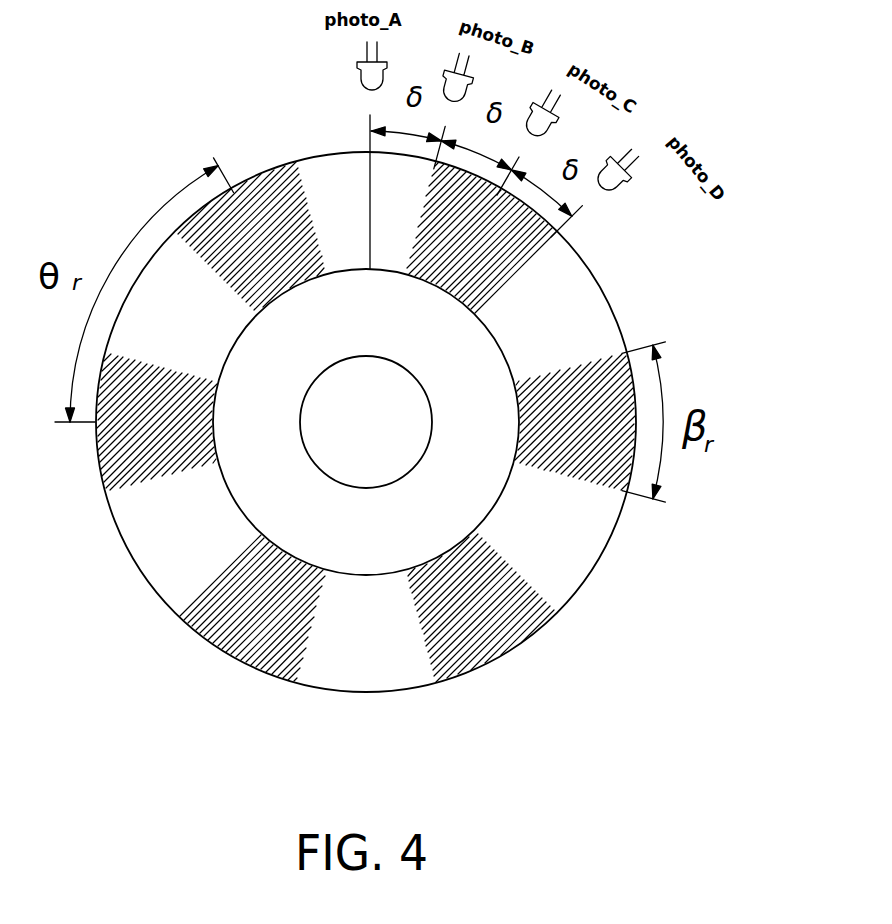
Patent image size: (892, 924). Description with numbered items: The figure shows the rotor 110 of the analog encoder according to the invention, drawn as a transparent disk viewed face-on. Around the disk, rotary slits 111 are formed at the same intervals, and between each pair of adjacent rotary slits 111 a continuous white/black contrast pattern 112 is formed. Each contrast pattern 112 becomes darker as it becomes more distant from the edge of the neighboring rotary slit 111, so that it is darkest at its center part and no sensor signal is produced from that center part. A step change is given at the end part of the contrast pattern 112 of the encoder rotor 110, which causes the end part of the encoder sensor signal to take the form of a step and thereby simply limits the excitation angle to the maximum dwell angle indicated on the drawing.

The rotor 110 is at (228, 138).
The rotary slits 111 is at (568, 308).
The contrast pattern 112 is at (573, 432).